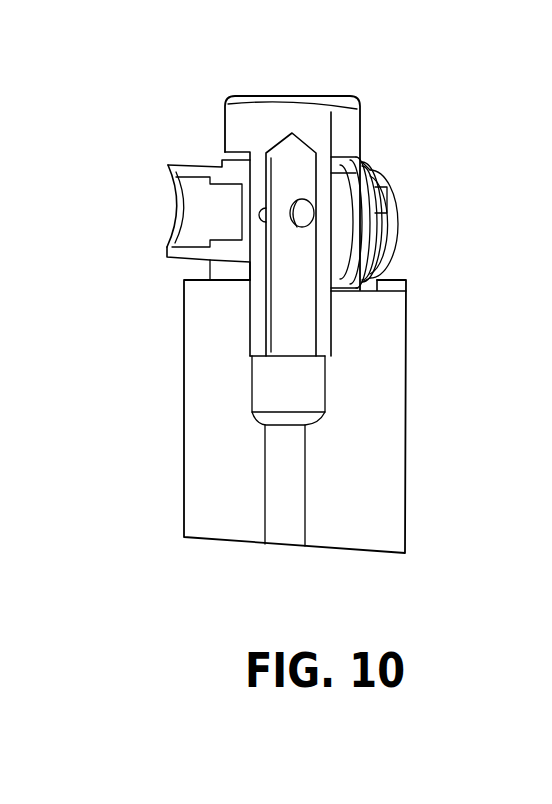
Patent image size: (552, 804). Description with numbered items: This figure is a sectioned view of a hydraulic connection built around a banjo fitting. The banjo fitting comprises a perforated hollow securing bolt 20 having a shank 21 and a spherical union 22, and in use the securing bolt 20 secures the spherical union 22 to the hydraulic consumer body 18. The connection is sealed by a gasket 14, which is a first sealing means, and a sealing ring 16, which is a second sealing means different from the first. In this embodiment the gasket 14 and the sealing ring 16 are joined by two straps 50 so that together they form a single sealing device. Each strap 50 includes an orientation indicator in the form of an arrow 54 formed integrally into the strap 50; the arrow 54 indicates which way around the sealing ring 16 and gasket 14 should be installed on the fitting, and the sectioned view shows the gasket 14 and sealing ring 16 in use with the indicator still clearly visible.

The gasket 14 is at (358, 155).
The sealing ring 16 is at (343, 288).
The hydraulic consumer body 18 is at (367, 481).
The securing bolt 20 is at (325, 118).
The shank 21 is at (257, 245).
The spherical union 22 is at (225, 177).
The strap 50 is at (390, 235).
The arrow 54 is at (395, 192).